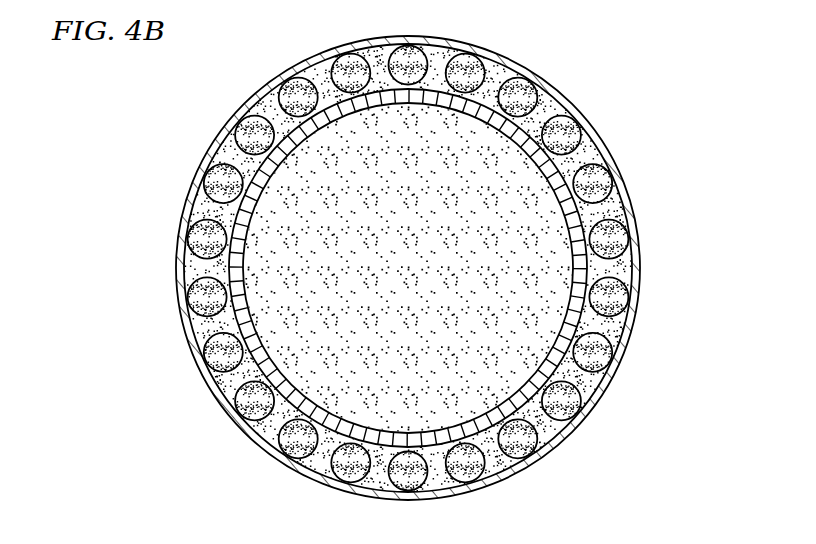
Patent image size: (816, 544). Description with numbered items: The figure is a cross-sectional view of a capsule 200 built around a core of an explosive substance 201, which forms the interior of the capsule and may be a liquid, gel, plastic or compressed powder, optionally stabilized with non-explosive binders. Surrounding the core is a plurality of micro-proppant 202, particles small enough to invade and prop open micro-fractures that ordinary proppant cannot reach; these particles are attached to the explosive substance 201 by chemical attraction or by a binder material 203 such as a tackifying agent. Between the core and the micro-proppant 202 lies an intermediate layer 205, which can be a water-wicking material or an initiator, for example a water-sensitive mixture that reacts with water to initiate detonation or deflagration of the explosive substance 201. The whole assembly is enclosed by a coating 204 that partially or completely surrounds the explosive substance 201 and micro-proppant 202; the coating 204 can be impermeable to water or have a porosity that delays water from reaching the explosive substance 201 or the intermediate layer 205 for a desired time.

The capsule 200 is at (398, 265).
The explosive substance 201 is at (550, 262).
The micro-proppant 202 is at (610, 354).
The binder material 203 is at (217, 395).
The coating 204 is at (197, 175).
The intermediate layer 205 is at (552, 418).